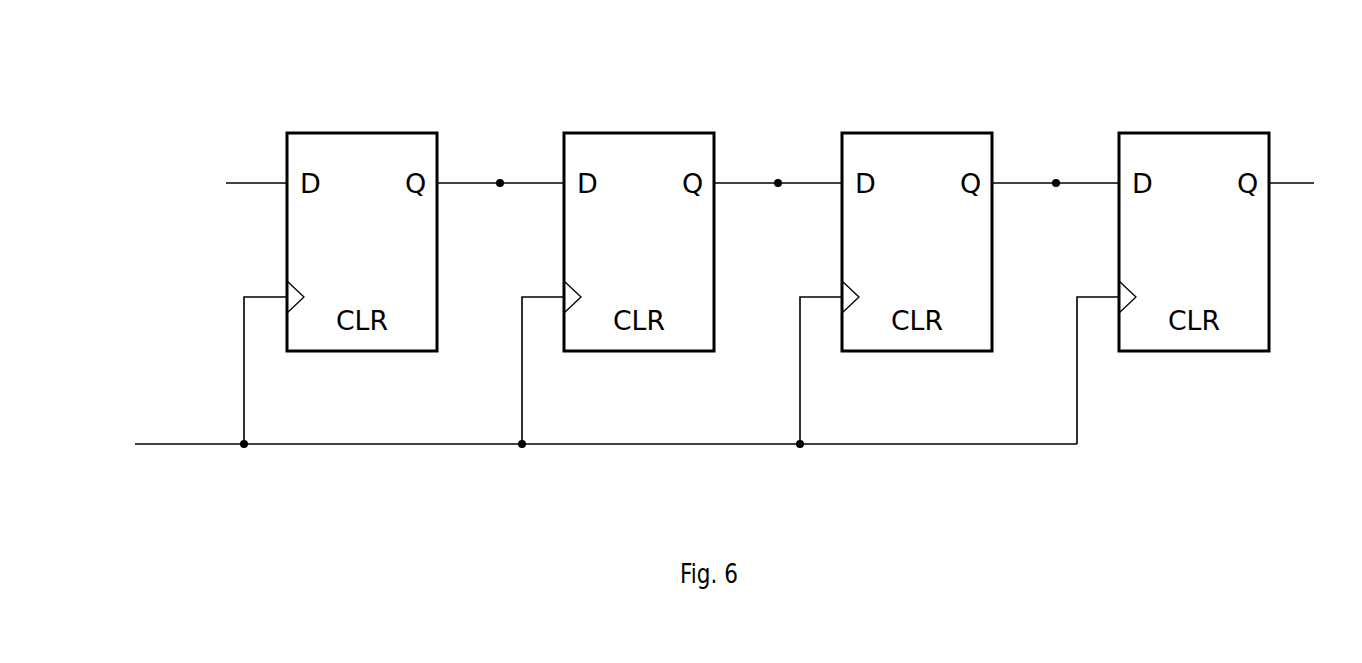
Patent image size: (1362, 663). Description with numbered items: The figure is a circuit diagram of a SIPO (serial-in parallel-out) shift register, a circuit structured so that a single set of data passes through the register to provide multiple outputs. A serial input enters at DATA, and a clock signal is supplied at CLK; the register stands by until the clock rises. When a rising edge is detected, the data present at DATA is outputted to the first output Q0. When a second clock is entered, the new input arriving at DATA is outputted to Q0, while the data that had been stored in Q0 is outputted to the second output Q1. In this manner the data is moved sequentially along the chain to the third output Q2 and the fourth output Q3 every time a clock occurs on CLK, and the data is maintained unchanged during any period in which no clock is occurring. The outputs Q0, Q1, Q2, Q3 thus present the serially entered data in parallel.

The first output Q0 is at (500, 183).
The second output Q1 is at (778, 183).
The third output Q2 is at (1056, 183).
The fourth output Q3 is at (1314, 183).
The data input DATA is at (215, 183).
The clock input CLK is at (627, 372).